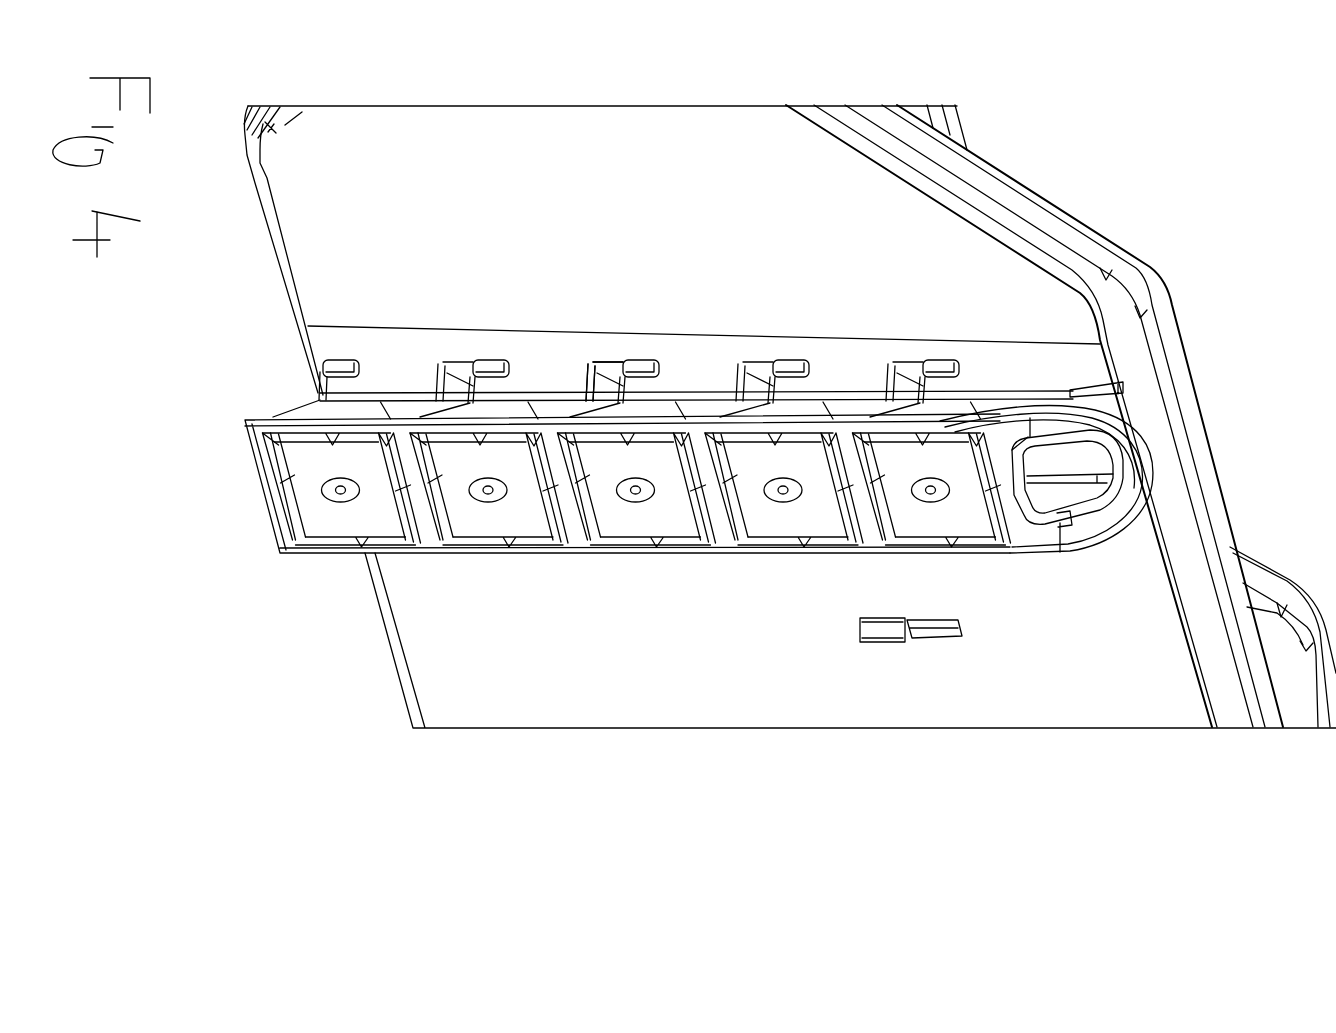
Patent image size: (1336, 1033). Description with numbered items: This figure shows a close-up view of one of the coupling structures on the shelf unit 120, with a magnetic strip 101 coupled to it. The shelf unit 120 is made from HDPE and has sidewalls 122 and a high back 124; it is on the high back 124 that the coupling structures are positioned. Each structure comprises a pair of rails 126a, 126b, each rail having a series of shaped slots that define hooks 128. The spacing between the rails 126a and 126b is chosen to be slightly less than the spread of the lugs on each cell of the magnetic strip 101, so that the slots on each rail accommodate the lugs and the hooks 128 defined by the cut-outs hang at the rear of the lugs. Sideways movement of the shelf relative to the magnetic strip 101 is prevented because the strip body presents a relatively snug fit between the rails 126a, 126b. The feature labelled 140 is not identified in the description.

The magnetic strip 101 is at (640, 340).
The shelf unit 120 is at (1185, 247).
The sidewalls 122 is at (297, 383).
The high back 124 is at (1035, 680).
The rail 126a is at (695, 353).
The rail 126b is at (1048, 460).
The hooks 128 is at (440, 367).
The tab leg 140 is at (582, 368).